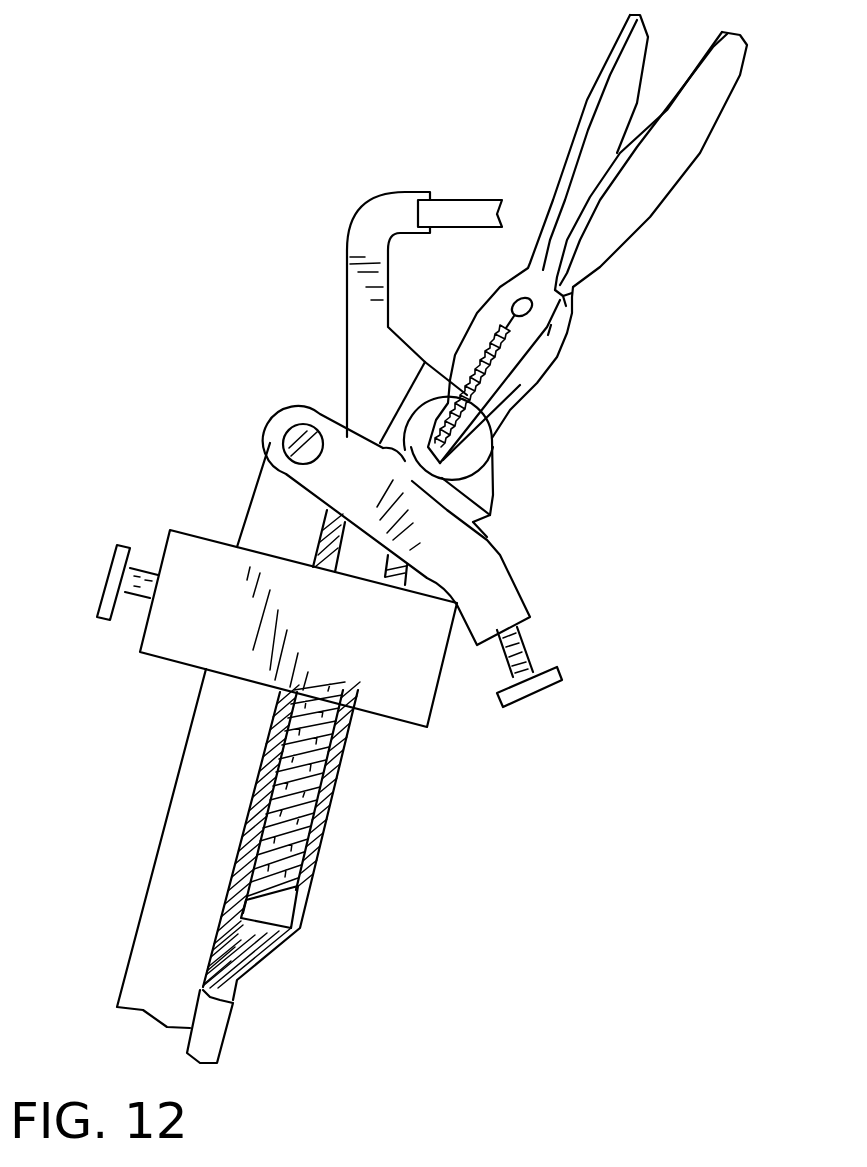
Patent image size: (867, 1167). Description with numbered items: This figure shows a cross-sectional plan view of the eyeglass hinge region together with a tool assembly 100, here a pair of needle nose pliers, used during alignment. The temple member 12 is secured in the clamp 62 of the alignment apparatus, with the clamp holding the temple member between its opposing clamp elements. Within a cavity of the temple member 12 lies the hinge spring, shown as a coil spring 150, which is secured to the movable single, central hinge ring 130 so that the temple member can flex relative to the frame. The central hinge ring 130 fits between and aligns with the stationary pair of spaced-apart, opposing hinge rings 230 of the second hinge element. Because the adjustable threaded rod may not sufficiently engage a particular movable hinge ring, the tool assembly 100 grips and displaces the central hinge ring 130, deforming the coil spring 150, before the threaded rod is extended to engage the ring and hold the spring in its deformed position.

The tool assembly 100 is at (655, 243).
The spaced-apart, opposing hinge rings 230 is at (495, 438).
The single, central hinge ring 130 is at (493, 495).
The clamp 62 is at (183, 693).
The coil spring 150 is at (340, 764).
The temple member 12 is at (210, 1042).